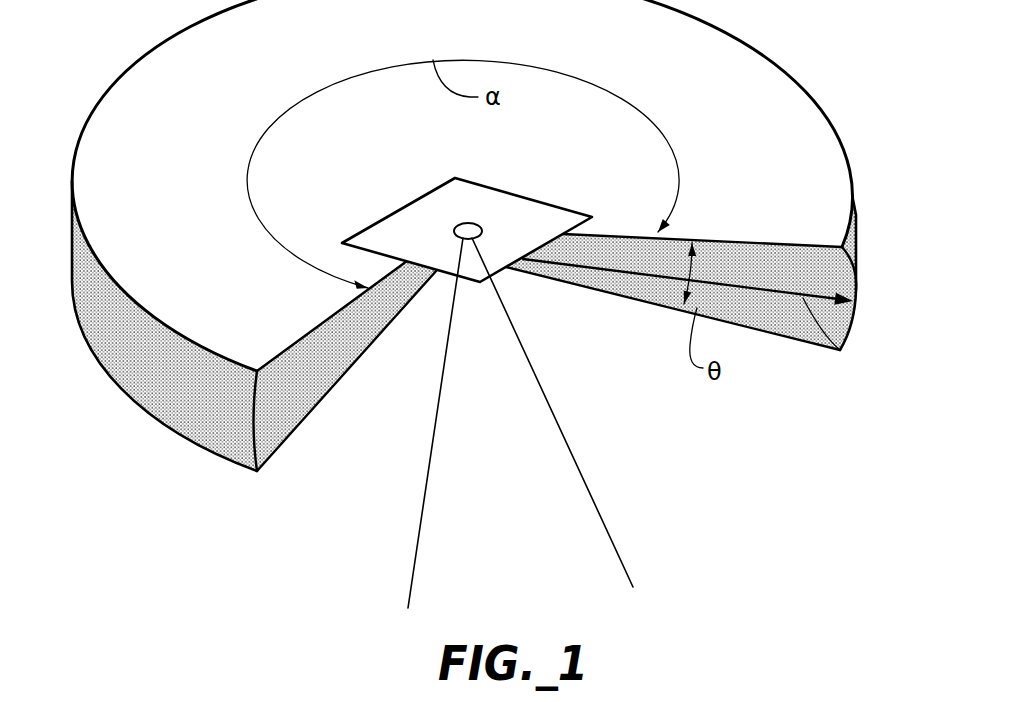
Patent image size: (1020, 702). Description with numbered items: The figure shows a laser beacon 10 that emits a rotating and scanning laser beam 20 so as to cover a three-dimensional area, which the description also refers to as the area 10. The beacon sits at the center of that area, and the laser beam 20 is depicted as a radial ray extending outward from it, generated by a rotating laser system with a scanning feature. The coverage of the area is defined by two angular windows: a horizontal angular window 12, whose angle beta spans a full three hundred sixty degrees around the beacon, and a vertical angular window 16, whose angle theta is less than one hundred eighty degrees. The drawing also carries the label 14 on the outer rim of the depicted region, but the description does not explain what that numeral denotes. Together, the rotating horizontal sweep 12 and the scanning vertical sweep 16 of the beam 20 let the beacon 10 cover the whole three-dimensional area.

The laser beacon 10 is at (179, 513).
The horizontal angular window 12 is at (503, 203).
The annular ring body 14 is at (766, 68).
The vertical angular window 16 is at (730, 308).
The laser beam 20 is at (843, 348).